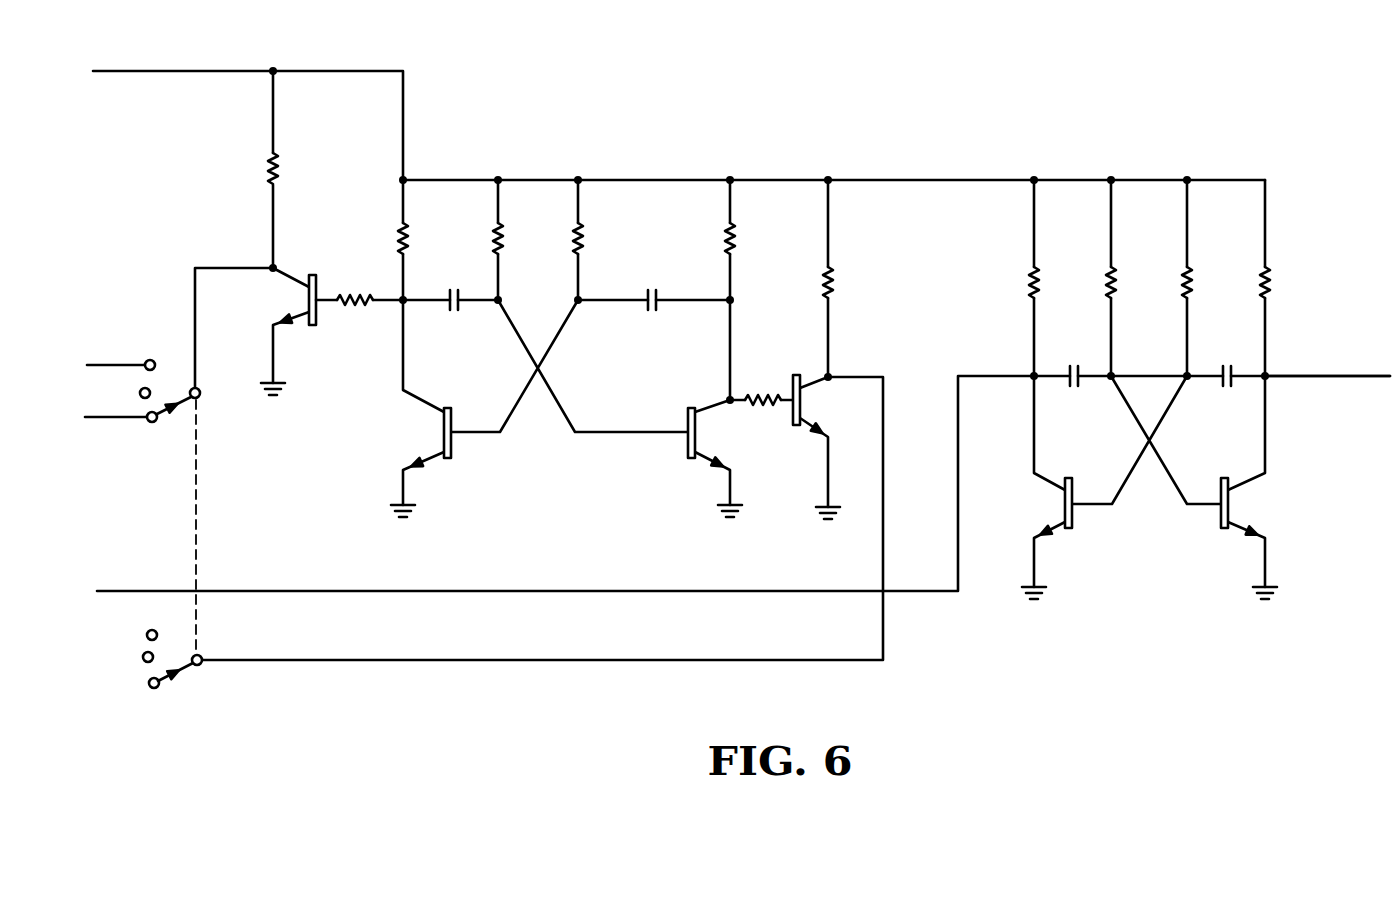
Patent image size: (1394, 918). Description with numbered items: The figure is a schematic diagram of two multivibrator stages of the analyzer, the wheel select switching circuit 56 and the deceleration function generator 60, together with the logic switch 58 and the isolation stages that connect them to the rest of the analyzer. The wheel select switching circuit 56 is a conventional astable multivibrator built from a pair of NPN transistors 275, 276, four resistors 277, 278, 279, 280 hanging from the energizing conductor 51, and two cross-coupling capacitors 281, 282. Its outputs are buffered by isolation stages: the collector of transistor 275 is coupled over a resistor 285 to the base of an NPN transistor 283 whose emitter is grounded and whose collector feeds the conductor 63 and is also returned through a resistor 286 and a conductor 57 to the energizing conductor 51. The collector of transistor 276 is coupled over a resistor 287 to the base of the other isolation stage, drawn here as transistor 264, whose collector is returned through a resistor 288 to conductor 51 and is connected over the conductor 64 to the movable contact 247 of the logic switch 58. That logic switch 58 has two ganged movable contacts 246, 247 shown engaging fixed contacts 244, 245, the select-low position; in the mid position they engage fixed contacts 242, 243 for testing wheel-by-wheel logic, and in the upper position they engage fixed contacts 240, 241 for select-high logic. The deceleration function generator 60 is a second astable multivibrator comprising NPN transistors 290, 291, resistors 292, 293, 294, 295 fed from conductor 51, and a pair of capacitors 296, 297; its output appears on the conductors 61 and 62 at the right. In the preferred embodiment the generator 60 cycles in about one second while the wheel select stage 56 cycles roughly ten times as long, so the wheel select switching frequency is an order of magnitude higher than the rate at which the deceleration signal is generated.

The energizing conductor 51 is at (900, 180).
The wheel select switching circuit 56 is at (560, 452).
The conductor 57 is at (277, 122).
The logic switch 58 is at (118, 307).
The deceleration function generator 60 is at (1122, 525).
The conductor 61 is at (130, 591).
The output conductor 62 is at (1335, 376).
The conductor 63 is at (234, 268).
The conductor 64 is at (529, 660).
The fixed contact 240 is at (154, 360).
The fixed contact 241 is at (150, 630).
The fixed contact 242 is at (140, 393).
The fixed contact 243 is at (143, 657).
The fixed contact 244 is at (152, 423).
The fixed contact 245 is at (156, 689).
The movable contact 246 is at (198, 400).
The movable contact 247 is at (185, 672).
The transistor 264 is at (824, 447).
The transistor 275 is at (421, 408).
The transistor 276 is at (718, 408).
The resistor 277 is at (380, 240).
The resistor 278 is at (474, 240).
The resistor 279 is at (555, 240).
The resistor 280 is at (705, 240).
The capacitor 281 is at (450, 316).
The capacitor 282 is at (654, 316).
The transistor 283 is at (276, 331).
The resistor 285 is at (359, 316).
The resistor 286 is at (298, 170).
The resistor 287 is at (761, 387).
The resistor 288 is at (855, 278).
The transistor 290 is at (1040, 487).
The transistor 291 is at (1255, 487).
The resistor 292 is at (1010, 278).
The resistor 293 is at (1087, 278).
The resistor 294 is at (1163, 278).
The resistor 295 is at (1241, 278).
The capacitor 296 is at (1078, 390).
The capacitor 297 is at (1223, 390).